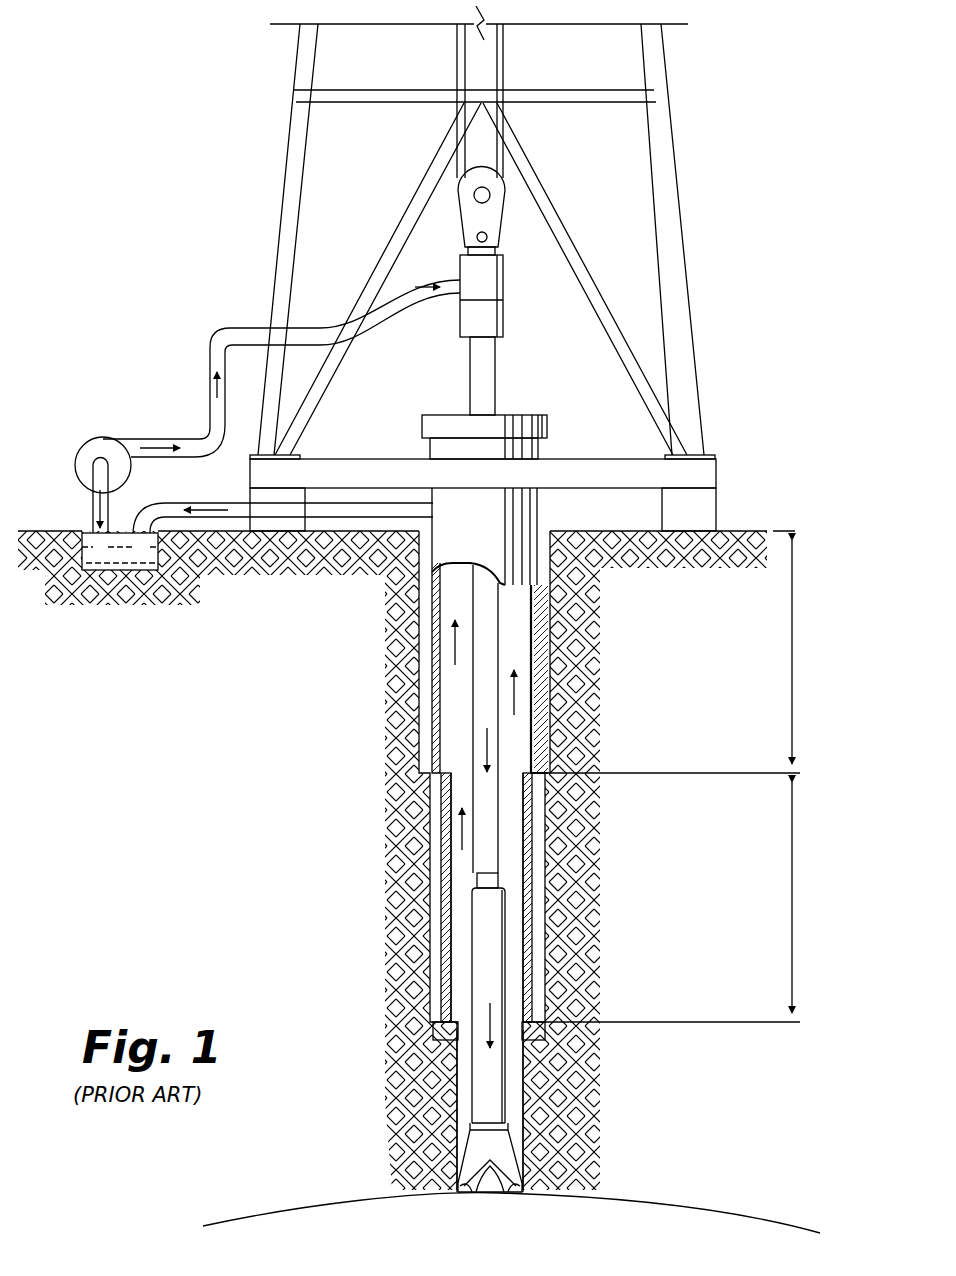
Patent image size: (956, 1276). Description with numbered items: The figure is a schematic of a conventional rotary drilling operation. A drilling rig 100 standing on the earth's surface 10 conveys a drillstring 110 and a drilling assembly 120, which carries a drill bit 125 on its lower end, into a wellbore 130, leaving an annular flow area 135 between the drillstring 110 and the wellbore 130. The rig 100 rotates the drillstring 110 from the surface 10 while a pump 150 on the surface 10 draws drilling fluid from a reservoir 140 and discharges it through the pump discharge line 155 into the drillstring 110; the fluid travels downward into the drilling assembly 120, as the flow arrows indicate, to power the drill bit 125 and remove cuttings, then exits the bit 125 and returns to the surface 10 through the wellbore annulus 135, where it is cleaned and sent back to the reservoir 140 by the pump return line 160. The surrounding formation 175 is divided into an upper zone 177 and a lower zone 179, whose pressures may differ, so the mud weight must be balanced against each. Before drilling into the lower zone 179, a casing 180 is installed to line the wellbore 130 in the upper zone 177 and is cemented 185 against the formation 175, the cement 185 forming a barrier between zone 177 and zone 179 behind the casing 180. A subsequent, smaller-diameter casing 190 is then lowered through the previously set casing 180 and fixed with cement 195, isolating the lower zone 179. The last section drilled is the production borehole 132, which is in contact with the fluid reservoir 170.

The earth's surface 10 is at (747, 530).
The drilling rig 100 is at (673, 157).
The drillstring 110 is at (487, 608).
The drilling assembly 120 is at (505, 913).
The drill bit 125 is at (503, 1154).
The wellbore 130 is at (507, 643).
The production borehole 132 is at (517, 1083).
The annular flow area 135 is at (510, 740).
The reservoir 140 is at (122, 571).
The pump 150 is at (100, 438).
The pump discharge line 155 is at (210, 390).
The pump return line 160 is at (233, 500).
The fluid reservoir 170 is at (506, 1245).
The formation 175 is at (322, 849).
The upper zone 177 is at (793, 645).
The lower zone 179 is at (793, 895).
The casing 180 is at (535, 665).
The cement 185 is at (548, 699).
The casing 190 is at (528, 949).
The cement 195 is at (540, 982).